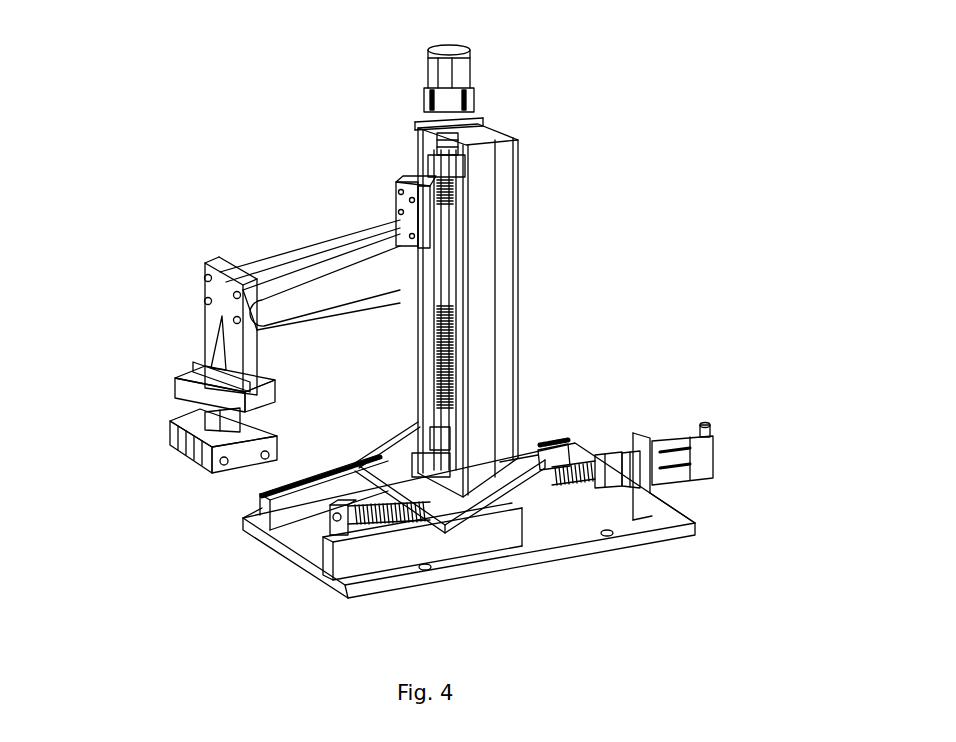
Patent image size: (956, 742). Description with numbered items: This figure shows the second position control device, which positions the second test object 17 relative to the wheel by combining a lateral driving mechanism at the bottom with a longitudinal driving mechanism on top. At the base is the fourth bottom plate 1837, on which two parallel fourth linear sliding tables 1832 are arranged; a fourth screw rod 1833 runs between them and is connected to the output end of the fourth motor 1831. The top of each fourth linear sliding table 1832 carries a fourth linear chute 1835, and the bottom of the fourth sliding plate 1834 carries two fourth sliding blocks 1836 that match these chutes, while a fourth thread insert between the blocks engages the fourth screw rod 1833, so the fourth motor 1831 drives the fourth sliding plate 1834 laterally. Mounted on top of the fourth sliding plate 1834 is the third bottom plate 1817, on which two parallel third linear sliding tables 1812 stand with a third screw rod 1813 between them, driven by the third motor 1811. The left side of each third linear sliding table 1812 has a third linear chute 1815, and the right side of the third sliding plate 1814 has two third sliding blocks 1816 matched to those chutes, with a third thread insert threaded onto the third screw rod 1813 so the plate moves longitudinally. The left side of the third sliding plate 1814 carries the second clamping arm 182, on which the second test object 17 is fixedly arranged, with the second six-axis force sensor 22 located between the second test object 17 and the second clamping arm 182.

The second test object 17 is at (205, 457).
The second six-axis force sensor 22 is at (192, 393).
The second clamping arm 182 is at (359, 303).
The third motor 1811 is at (456, 113).
The third linear sliding table 1812 is at (484, 197).
The third screw rod 1813 is at (451, 383).
The third sliding plate 1814 is at (409, 222).
The third linear chute 1815 is at (414, 178).
The third sliding block 1816 is at (464, 400).
The third bottom plate 1817 is at (517, 396).
The fourth motor 1831 is at (697, 431).
The fourth linear sliding table 1832 is at (567, 525).
The fourth screw rod 1833 is at (606, 454).
The fourth sliding plate 1834 is at (428, 516).
The fourth linear chute 1835 is at (425, 496).
The fourth sliding block 1836 is at (545, 444).
The fourth bottom plate 1837 is at (647, 544).